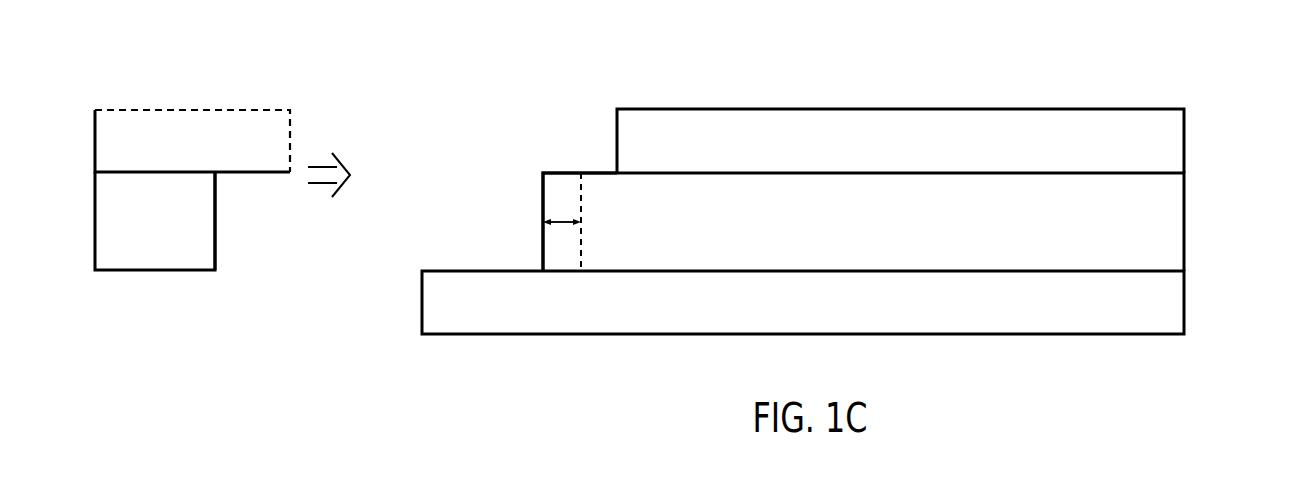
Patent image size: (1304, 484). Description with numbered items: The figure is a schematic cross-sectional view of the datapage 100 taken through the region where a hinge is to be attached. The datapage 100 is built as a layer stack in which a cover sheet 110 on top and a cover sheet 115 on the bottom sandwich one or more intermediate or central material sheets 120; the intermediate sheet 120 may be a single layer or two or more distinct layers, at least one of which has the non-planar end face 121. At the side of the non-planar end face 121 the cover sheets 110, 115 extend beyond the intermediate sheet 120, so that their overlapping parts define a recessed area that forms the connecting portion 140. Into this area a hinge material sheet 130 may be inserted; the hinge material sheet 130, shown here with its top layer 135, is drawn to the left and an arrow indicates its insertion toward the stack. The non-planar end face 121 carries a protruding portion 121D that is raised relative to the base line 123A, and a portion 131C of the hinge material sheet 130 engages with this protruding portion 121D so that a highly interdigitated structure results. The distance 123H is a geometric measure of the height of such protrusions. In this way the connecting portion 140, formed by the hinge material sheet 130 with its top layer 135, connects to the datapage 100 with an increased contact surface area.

The datapage 100 is at (829, 203).
The cover sheet 110 is at (1172, 141).
The cover sheet 115 is at (1172, 303).
The intermediate material sheet 120 is at (1193, 226).
The non-planar end face 121 is at (506, 192).
The protruding portion 121D is at (543, 212).
The base line 123A is at (583, 191).
The distance 123H is at (560, 228).
The hinge material sheet 130 is at (138, 289).
The portion of the hinge material sheet 131C is at (234, 245).
The top layer 135 is at (207, 110).
The connecting portion 140 is at (431, 90).